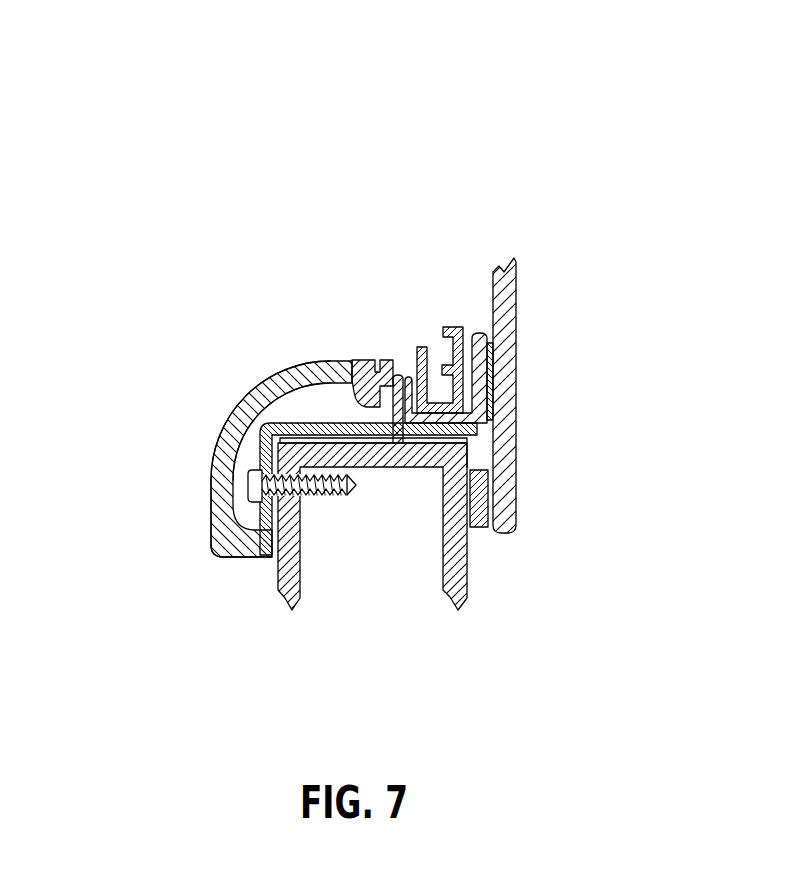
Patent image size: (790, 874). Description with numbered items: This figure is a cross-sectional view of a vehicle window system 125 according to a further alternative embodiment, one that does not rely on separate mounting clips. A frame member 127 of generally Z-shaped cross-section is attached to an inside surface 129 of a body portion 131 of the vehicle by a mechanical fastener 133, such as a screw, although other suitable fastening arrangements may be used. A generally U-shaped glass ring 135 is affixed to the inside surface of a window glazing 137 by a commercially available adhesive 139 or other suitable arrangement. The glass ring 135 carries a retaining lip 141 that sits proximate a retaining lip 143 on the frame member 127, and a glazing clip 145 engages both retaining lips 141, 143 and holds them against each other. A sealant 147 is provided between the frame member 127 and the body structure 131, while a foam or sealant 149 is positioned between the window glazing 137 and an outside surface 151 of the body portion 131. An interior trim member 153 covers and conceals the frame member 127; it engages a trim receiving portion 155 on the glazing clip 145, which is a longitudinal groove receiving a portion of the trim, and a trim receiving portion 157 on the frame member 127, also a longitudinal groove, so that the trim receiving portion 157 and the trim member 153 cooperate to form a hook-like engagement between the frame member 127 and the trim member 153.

The window system 125 is at (270, 150).
The frame member 127 is at (323, 422).
The inside surface 129 is at (276, 570).
The body portion 131 is at (470, 563).
The mechanical fastener 133 is at (250, 487).
The glass ring 135 is at (488, 335).
The window glazing 137 is at (517, 312).
The adhesive 139 is at (492, 367).
The retaining lip 141 is at (420, 378).
The retaining lip 143 is at (396, 366).
The glazing clip 145 is at (352, 360).
The sealant 147 is at (242, 423).
The foam or sealant 149 is at (482, 530).
The outside surface 151 is at (470, 457).
The interior trim member 153 is at (327, 361).
The trim receiving portion 155 is at (368, 360).
The trim receiving portion 157 is at (245, 557).